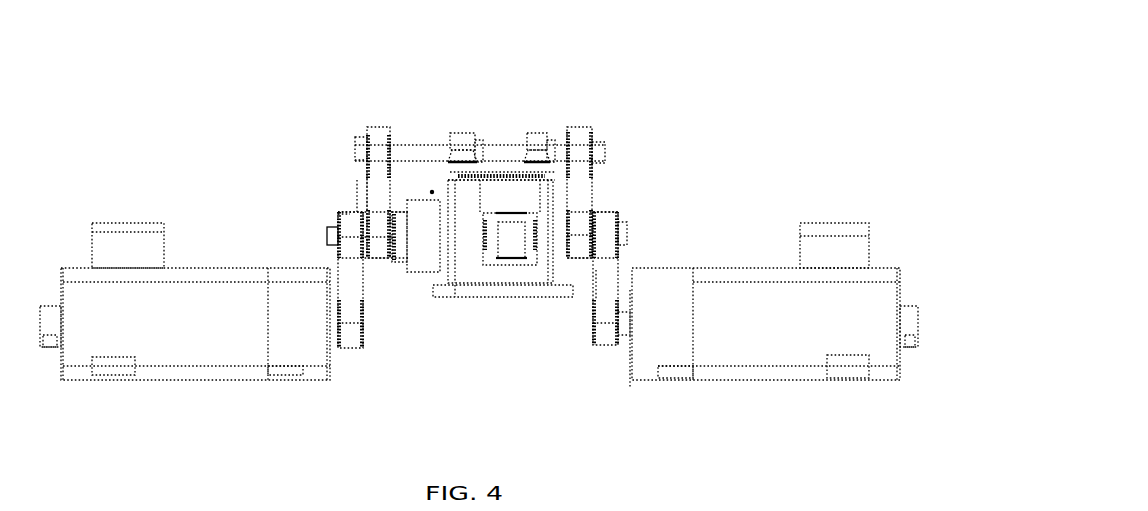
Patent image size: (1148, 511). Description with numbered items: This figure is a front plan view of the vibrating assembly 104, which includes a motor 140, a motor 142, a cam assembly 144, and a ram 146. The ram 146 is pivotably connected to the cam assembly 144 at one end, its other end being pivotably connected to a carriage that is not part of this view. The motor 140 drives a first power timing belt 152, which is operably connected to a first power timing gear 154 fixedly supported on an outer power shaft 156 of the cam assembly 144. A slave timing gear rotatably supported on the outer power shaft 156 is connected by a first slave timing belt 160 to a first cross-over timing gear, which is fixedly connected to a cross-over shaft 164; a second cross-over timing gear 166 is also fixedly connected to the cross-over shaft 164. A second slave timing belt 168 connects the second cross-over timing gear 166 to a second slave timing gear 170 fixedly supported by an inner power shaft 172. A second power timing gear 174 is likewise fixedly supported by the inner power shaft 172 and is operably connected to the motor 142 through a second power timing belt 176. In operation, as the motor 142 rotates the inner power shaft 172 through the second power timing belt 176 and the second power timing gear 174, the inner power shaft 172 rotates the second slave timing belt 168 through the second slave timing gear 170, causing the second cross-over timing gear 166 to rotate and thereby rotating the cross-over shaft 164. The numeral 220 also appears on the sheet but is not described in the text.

The vibrating assembly 104 is at (726, 45).
The cam assembly 144 is at (515, 100).
The ram 146 is at (485, 243).
The motor 140 is at (763, 380).
The motor 142 is at (140, 380).
The first power timing belt 152 is at (593, 293).
The first power timing gear 154 is at (620, 212).
The outer power shaft 156 is at (627, 235).
The first slave timing belt 160 is at (592, 190).
The cross-over shaft 164 is at (605, 150).
The second cross-over timing gear 166 is at (366, 130).
The second slave timing belt 168 is at (366, 185).
The second slave timing gear 170 is at (395, 262).
The inner power shaft 172 is at (327, 236).
The second power timing gear 174 is at (338, 215).
The second power timing belt 176 is at (338, 288).
The sheet reference 220 is at (713, 500).